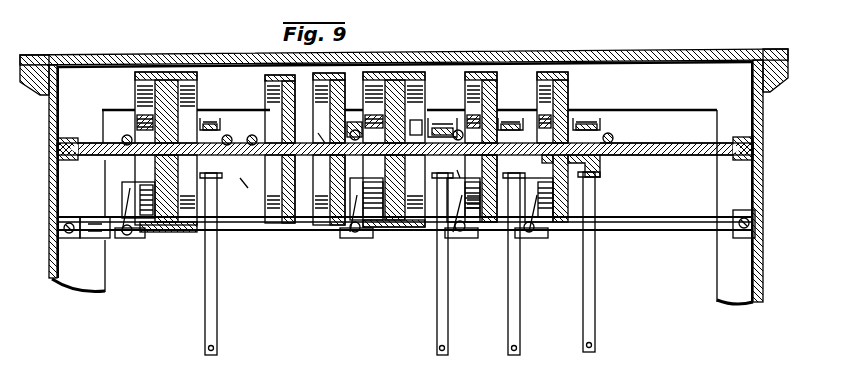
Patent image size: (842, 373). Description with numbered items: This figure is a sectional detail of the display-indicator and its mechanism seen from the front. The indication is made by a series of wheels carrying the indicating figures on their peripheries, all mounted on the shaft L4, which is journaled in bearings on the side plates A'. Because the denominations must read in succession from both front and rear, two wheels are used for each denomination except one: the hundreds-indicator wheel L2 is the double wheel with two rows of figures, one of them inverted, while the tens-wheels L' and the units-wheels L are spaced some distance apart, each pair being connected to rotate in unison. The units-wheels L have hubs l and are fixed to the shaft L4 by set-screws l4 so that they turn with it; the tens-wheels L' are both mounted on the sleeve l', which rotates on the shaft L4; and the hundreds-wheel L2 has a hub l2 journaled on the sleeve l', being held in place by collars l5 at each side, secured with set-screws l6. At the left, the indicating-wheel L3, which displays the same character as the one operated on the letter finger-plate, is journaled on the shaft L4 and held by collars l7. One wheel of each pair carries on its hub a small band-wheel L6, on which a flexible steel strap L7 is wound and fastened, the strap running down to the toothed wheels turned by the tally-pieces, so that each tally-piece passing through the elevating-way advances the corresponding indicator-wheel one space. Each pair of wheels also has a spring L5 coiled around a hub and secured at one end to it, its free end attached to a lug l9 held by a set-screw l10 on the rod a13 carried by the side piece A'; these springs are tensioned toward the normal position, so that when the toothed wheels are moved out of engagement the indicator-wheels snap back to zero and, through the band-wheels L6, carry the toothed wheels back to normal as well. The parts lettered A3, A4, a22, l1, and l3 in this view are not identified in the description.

The top plate of casing A4 is at (687, 52).
The casing A3 is at (404, 176).
The side plates A' is at (424, 146).
The shaft bearing a22 is at (58, 143).
The rod a13 is at (663, 223).
The units-wheels L is at (418, 127).
The tens-wheels L' is at (340, 131).
The hundreds-indicator wheel L2 is at (388, 75).
The indicating-wheel L3 is at (163, 73).
The shaft L4 is at (97, 158).
The spring L5 is at (135, 113).
The band-wheels L6 is at (218, 188).
The steel straps L7 is at (217, 285).
The hubs l is at (407, 180).
The sleeve l' is at (421, 119).
The roller l1 is at (240, 133).
The hub l2 is at (434, 125).
The roller l3 is at (175, 132).
The set-screws l4 is at (618, 130).
The collars l5 is at (408, 124).
The set-screws l6 is at (360, 121).
The collars l7 is at (333, 194).
The lugs l9 is at (143, 240).
The set-screws l10 is at (127, 237).